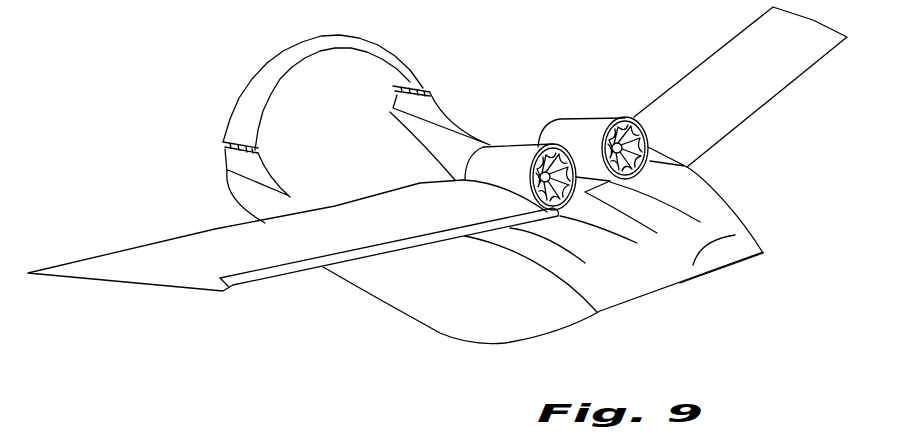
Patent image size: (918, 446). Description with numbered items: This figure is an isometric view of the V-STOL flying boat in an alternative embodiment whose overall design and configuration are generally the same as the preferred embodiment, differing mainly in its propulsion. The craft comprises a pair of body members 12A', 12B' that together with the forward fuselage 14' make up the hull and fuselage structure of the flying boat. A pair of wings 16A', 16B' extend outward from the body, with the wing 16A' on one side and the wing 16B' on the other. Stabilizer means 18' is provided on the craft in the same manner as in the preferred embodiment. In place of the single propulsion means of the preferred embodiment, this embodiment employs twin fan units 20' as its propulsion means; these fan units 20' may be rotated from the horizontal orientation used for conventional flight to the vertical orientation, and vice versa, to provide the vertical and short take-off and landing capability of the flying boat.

The body member 12A' is at (543, 305).
The body member 12B' is at (724, 304).
The forward fuselage 14' is at (710, 216).
The wing 16A' is at (293, 278).
The wing 16B' is at (741, 91).
The stabilizer means 18' is at (338, 128).
The twin fan units 20' is at (556, 122).